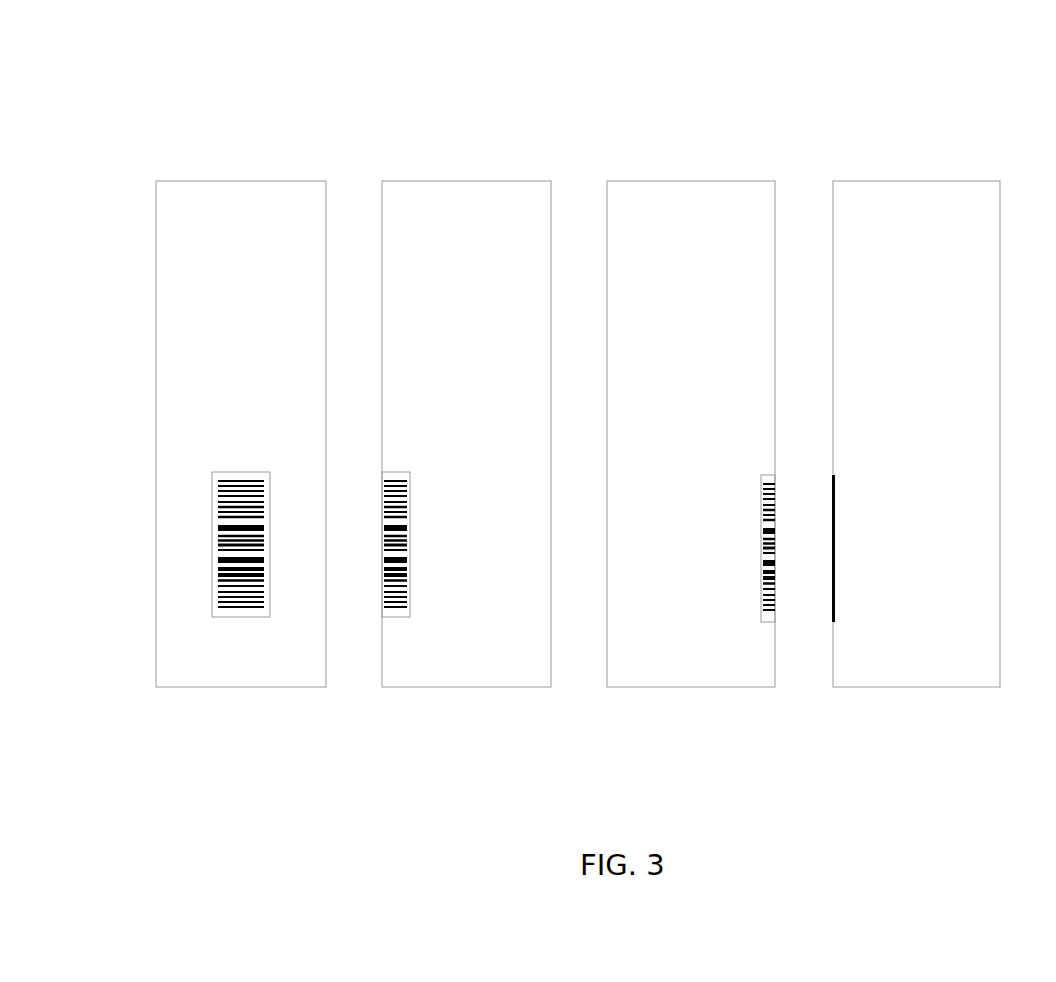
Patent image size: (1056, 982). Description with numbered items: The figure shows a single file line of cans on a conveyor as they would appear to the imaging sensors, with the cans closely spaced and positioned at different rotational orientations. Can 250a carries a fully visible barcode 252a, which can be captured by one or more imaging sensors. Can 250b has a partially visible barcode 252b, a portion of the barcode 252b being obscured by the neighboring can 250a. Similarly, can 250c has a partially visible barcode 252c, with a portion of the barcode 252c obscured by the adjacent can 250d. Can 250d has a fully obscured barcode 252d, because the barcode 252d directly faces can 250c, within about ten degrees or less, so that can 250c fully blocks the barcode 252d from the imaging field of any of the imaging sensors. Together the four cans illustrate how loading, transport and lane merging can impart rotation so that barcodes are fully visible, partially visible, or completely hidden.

The can 250a is at (243, 182).
The can 250b is at (467, 182).
The can 250c is at (691, 182).
The can 250d is at (916, 182).
The barcode 252a is at (215, 543).
The barcode 252b is at (409, 603).
The barcode 252c is at (763, 612).
The barcode 252d is at (835, 598).